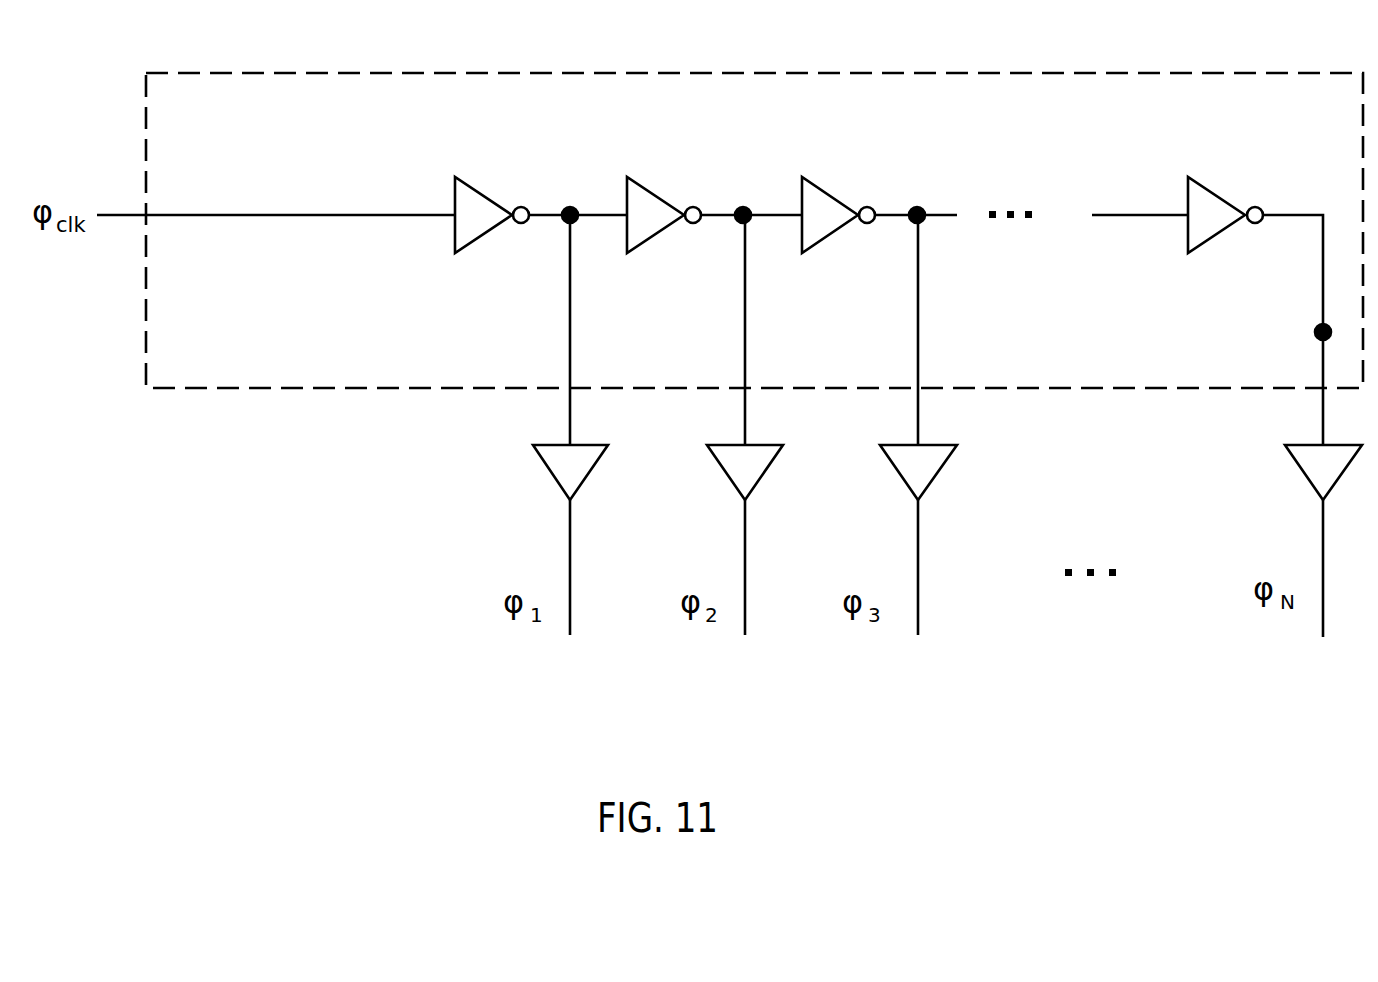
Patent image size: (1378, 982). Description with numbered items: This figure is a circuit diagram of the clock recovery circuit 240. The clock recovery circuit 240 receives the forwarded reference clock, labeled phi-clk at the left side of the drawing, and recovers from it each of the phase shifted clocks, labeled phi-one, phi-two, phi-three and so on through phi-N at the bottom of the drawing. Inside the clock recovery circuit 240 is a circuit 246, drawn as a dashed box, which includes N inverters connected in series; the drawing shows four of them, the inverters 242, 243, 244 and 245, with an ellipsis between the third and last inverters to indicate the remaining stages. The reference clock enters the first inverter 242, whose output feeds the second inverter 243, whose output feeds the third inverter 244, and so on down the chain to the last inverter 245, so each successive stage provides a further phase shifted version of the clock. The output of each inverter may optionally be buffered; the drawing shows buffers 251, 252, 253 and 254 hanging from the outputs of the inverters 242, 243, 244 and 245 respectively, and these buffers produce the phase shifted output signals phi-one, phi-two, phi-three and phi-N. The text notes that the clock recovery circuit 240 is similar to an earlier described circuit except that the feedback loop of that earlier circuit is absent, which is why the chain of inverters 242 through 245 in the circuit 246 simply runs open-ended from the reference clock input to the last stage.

The clock recovery circuit 240 is at (146, 706).
The inverter 242 is at (489, 196).
The inverter 243 is at (646, 184).
The inverter 244 is at (836, 193).
The inverter 245 is at (1223, 200).
The circuit 246 is at (1033, 389).
The buffer 251 is at (545, 470).
The buffer 252 is at (720, 471).
The buffer 253 is at (892, 468).
The buffer 254 is at (1298, 473).